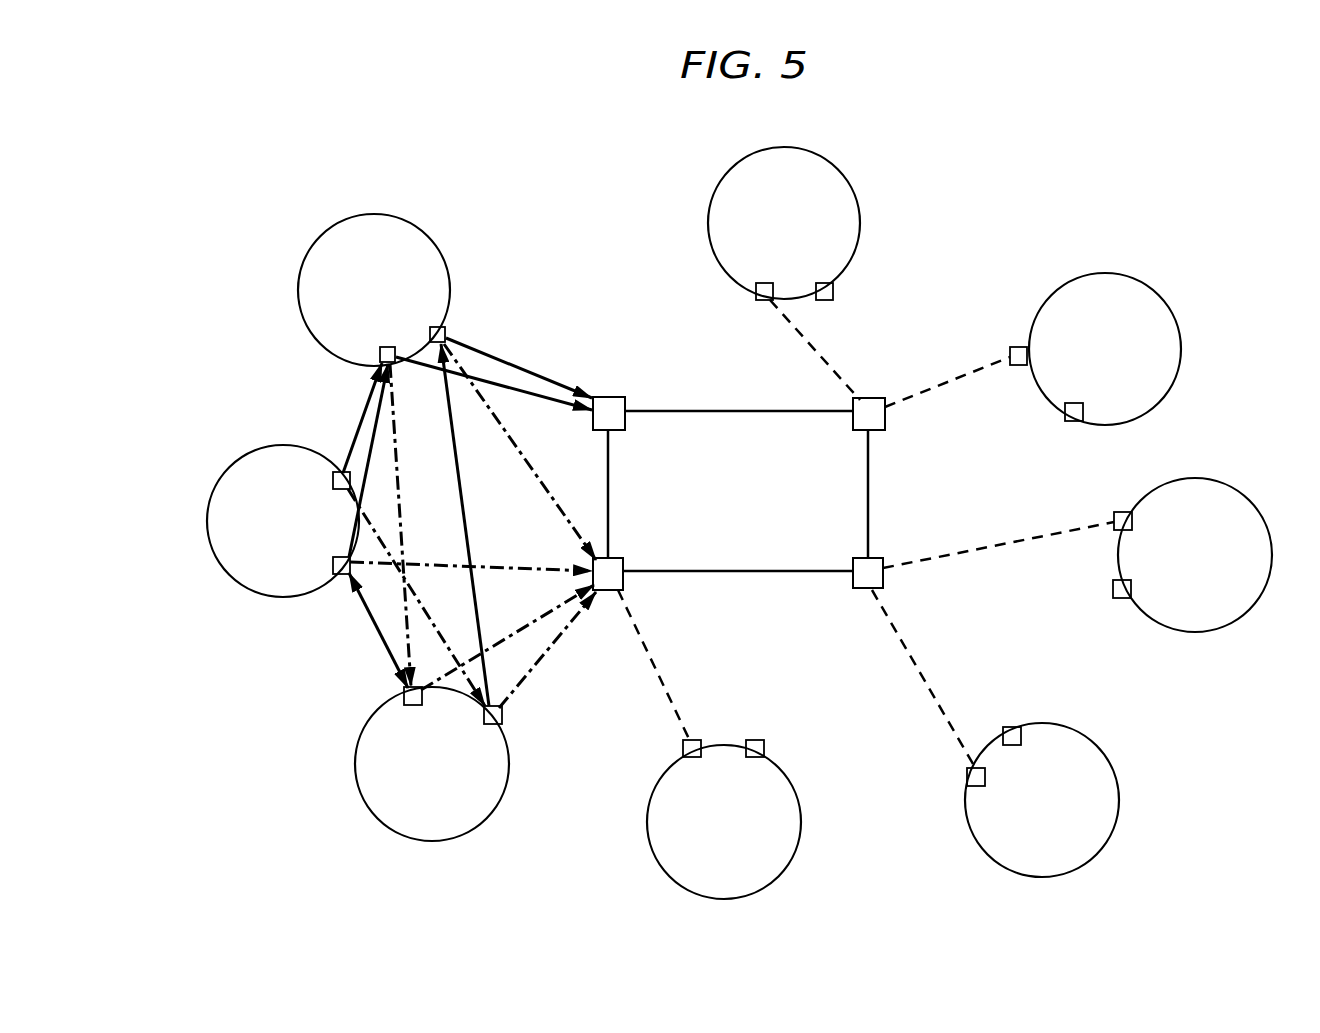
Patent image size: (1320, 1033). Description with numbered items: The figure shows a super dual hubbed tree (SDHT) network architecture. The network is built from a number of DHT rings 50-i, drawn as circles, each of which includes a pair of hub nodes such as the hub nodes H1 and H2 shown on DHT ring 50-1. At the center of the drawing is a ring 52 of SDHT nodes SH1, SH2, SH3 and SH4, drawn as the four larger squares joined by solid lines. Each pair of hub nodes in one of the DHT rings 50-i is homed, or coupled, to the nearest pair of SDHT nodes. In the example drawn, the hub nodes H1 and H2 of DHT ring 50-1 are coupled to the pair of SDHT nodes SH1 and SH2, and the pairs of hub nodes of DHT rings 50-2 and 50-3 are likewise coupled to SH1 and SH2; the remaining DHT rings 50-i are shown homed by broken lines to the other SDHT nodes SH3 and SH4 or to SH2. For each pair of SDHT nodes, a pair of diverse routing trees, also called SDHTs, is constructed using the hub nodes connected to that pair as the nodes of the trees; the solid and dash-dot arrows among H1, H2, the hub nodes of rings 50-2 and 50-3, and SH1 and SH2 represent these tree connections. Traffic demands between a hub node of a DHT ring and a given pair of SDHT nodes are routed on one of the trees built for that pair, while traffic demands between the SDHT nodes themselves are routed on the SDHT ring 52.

The DHT ring 50-1 is at (436, 245).
The DHT ring 50-2 is at (236, 575).
The DHT ring 50-3 is at (380, 820).
The DHT rings 50-i is at (1150, 288).
The hub node H1 is at (378, 358).
The hub node H2 is at (447, 334).
The SDHT node SH1 is at (604, 397).
The SDHT node SH2 is at (610, 558).
The SDHT node SH3 is at (878, 432).
The SDHT node SH4 is at (862, 590).
The ring of SDHT nodes 52 is at (703, 410).